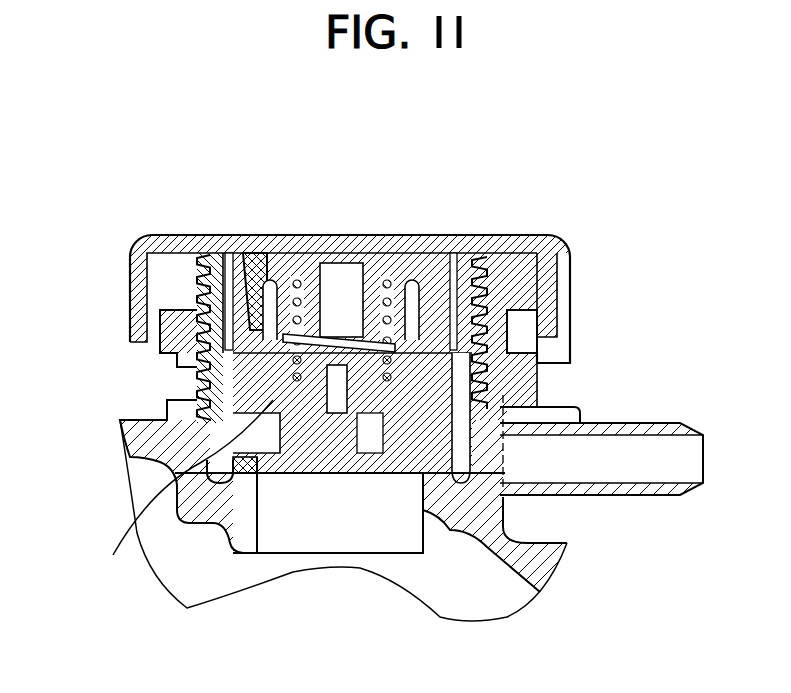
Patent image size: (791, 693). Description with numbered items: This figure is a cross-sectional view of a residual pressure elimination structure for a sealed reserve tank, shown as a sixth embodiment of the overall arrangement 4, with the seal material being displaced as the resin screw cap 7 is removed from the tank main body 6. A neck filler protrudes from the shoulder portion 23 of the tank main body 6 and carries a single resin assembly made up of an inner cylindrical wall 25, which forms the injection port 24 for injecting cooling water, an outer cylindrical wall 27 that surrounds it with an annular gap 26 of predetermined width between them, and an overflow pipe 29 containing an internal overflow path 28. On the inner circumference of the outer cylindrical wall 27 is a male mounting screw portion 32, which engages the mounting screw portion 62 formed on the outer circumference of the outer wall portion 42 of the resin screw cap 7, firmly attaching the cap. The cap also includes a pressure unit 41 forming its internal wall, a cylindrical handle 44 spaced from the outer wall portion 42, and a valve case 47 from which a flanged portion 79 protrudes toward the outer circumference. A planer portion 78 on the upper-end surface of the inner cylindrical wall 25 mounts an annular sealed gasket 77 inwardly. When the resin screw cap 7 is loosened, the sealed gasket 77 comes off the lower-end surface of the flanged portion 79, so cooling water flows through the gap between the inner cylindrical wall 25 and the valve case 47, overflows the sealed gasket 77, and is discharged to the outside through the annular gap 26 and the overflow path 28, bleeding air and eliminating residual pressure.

The fuel cap 4 is at (160, 124).
The tank main body 6 is at (102, 443).
The resin screw cap 7 is at (375, 235).
The shoulder portion 23 is at (132, 440).
The injection port 24 is at (305, 535).
The inner cylindrical wall 25 is at (187, 608).
The annular gap 26 is at (513, 420).
The outer cylindrical wall 27 is at (160, 357).
The overflow path 28 is at (643, 470).
The overflow pipe 29 is at (630, 423).
The mounting screw portion 32 is at (205, 315).
The pressure unit 41 is at (261, 250).
The outer wall portion 42 is at (455, 253).
The cylindrical handle 44 is at (573, 290).
The valve case 47 is at (512, 358).
The mounting screw portion 62 is at (490, 270).
The sealed gasket 77 is at (330, 510).
The planer portion 78 is at (258, 470).
The flanged portion 79 is at (178, 470).